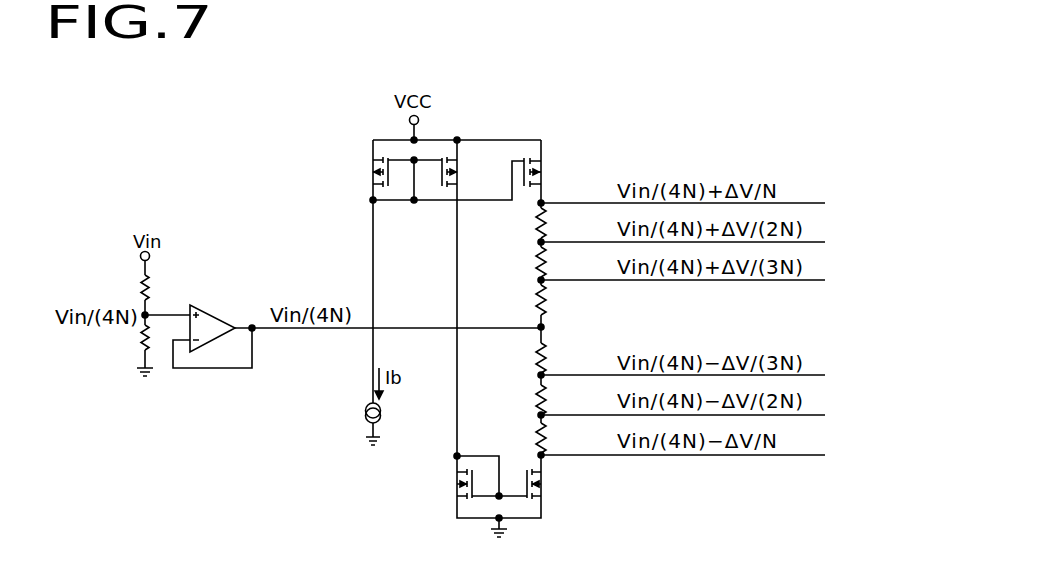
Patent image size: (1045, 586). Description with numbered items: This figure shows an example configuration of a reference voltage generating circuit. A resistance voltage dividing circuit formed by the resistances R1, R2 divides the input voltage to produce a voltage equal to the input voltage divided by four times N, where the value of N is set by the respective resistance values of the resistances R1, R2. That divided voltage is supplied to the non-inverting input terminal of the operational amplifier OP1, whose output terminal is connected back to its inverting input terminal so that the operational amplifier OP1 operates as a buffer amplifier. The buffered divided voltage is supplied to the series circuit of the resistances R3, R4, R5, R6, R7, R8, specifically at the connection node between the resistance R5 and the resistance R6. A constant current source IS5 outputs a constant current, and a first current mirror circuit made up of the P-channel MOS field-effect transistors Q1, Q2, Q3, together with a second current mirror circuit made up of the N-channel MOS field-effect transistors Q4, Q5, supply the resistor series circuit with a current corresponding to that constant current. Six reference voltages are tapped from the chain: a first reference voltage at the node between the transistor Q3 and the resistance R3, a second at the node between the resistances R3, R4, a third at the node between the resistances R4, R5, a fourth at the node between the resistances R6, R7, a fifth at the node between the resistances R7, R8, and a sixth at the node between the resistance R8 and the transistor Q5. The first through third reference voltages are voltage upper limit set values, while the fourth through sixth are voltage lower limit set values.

The P-channel MOS field-effect transistor Q1 is at (369, 173).
The P-channel MOS field-effect transistor Q2 is at (462, 173).
The P-channel MOS field-effect transistor Q3 is at (548, 173).
The N-channel MOS field-effect transistor Q4 is at (455, 485).
The N-channel MOS field-effect transistor Q5 is at (546, 485).
The resistance R1 is at (137, 288).
The resistance R2 is at (137, 338).
The resistance R3 is at (533, 222).
The resistance R4 is at (533, 260).
The resistance R5 is at (533, 299).
The resistance R6 is at (533, 355).
The resistance R7 is at (533, 395).
The resistance R8 is at (533, 435).
The operational amplifier OP1 is at (218, 313).
The constant current source IS5 is at (384, 414).